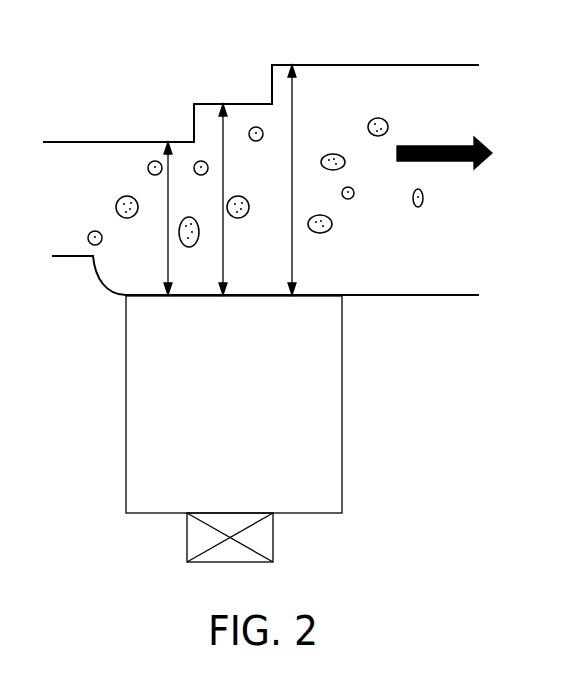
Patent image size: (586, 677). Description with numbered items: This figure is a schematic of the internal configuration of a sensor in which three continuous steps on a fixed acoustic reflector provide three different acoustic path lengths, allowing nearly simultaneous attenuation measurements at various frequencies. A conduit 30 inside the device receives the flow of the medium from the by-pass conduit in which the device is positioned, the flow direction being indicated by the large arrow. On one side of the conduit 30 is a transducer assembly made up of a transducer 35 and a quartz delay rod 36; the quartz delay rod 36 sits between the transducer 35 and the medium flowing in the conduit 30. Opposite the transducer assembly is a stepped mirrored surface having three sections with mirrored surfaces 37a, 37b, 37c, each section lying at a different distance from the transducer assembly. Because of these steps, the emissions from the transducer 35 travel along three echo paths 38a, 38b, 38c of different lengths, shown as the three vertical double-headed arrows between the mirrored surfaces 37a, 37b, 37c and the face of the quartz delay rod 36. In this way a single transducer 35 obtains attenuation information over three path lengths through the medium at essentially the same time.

The conduit 30 is at (395, 64).
The mirrored surface 37a is at (148, 142).
The mirrored surface 37b is at (252, 104).
The mirrored surface 37c is at (314, 66).
The echo path 38a is at (165, 270).
The echo path 38b is at (224, 272).
The echo path 38c is at (294, 272).
The quartz delay rod 36 is at (343, 452).
The transducer 35 is at (274, 540).